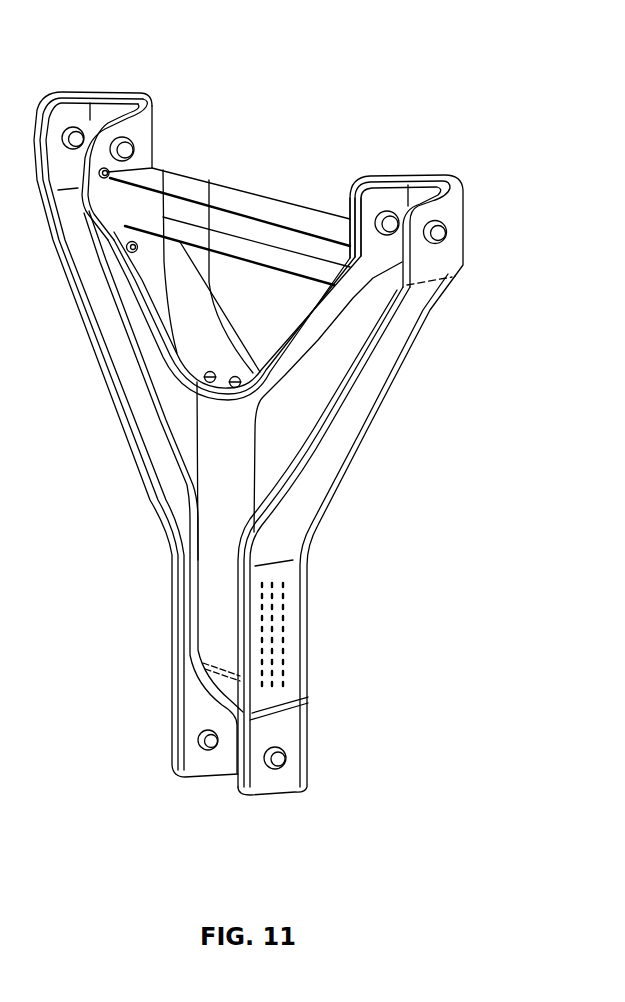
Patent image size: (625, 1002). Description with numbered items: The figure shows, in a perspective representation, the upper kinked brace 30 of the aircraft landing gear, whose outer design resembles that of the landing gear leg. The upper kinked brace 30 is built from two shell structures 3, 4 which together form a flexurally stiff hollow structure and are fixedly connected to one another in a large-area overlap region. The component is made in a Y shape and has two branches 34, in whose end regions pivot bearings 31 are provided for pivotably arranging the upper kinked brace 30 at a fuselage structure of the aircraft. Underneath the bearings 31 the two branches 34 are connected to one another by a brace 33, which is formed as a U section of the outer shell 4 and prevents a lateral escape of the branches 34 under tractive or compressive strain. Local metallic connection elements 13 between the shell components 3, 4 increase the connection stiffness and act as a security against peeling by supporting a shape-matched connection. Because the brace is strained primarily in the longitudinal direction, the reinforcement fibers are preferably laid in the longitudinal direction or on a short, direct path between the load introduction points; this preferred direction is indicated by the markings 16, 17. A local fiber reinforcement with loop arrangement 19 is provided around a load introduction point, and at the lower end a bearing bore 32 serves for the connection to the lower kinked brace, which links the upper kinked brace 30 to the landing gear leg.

The shell structure 3 is at (263, 493).
The outer shell 4 is at (308, 493).
The local metallic connection element 13 is at (108, 127).
The preferred fiber direction 16 is at (292, 603).
The preferred fiber direction 17 is at (209, 180).
The local fiber reinforcement with loop arrangement 19 is at (410, 287).
The upper kinked brace 30 is at (235, 440).
The pivot bearing 31 is at (447, 238).
The bearing bore 32 is at (300, 760).
The brace 33 is at (262, 218).
The branch 34 is at (165, 252).